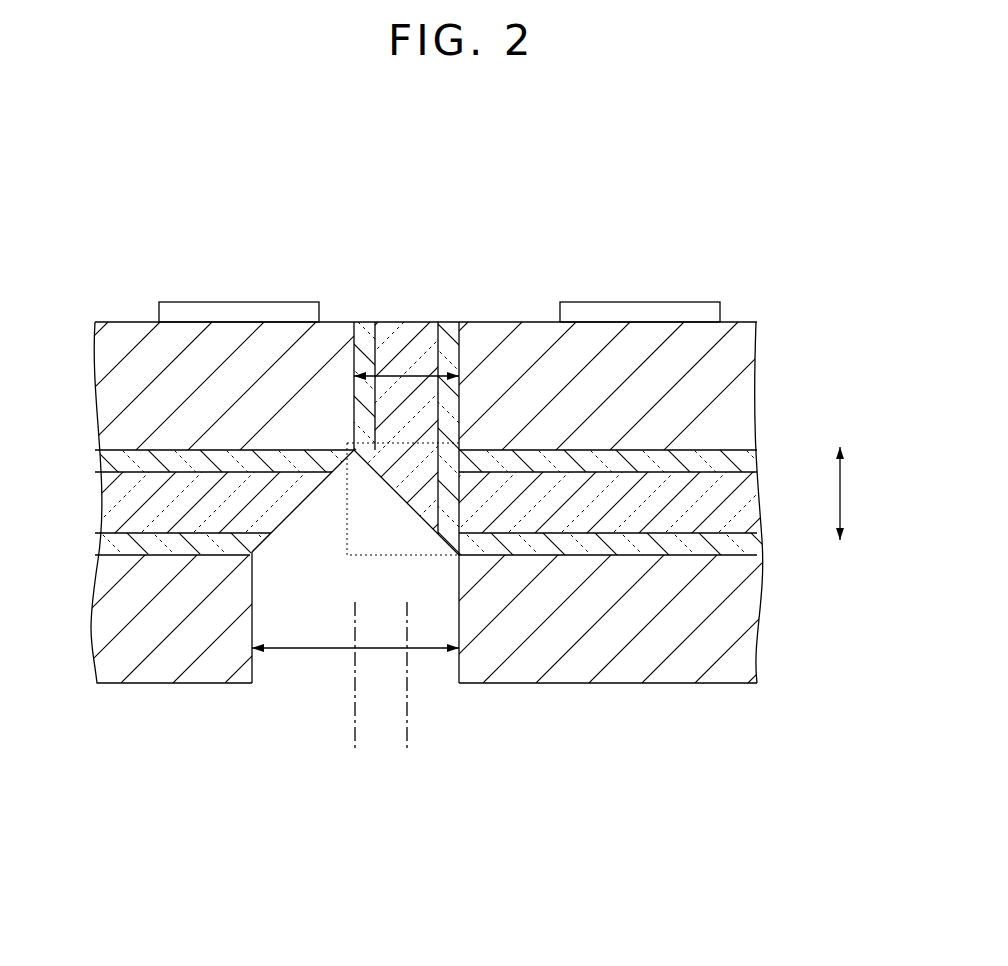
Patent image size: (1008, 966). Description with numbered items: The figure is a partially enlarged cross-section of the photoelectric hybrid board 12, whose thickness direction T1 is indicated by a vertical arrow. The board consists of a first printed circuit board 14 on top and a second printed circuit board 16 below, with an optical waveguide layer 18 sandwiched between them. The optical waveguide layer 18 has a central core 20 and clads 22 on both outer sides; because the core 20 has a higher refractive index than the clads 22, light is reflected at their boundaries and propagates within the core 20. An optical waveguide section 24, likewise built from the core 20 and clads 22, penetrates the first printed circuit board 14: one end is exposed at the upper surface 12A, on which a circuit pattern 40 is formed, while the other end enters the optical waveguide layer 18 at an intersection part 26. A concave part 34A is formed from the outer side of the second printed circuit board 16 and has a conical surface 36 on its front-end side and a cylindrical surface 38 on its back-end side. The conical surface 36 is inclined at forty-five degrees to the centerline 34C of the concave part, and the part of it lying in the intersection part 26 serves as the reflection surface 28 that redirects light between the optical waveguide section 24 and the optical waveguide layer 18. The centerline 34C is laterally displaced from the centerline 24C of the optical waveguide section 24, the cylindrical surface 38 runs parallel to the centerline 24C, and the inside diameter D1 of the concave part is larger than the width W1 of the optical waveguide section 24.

The photoelectric hybrid board 12 is at (733, 720).
The upper surface 12A is at (135, 322).
The first printed circuit board 14 is at (762, 372).
The second printed circuit board 16 is at (763, 598).
The optical waveguide layer 18 is at (763, 489).
The core 20 is at (402, 322).
The clads 22 is at (368, 322).
The optical waveguide section 24 is at (417, 322).
The centerline of the optical waveguide section 24C is at (410, 728).
The intersection part 26 is at (433, 558).
The reflection surface 28 is at (411, 509).
The concave part 34A is at (317, 684).
The centerline of the concave part 34C is at (356, 728).
The conical surface 36 is at (297, 508).
The cylindrical surface 38 is at (253, 658).
The circuit pattern 40 is at (238, 301).
The width of the optical waveguide section W1 is at (406, 399).
The inside diameter of the concave part D1 is at (320, 648).
The thickness direction T1 is at (848, 490).